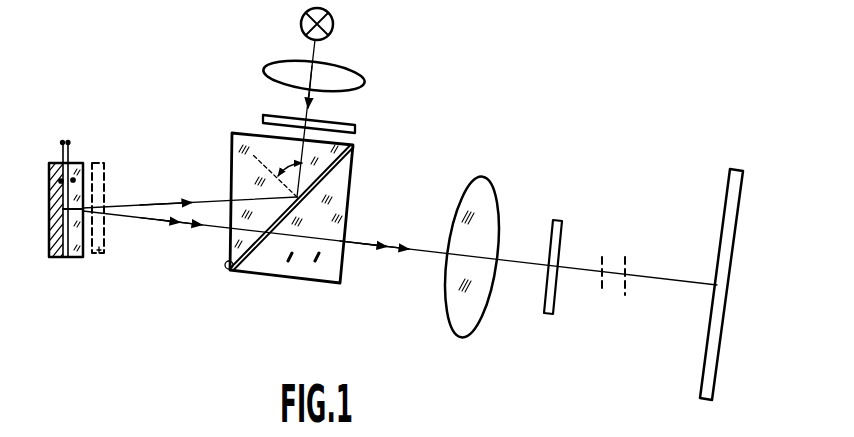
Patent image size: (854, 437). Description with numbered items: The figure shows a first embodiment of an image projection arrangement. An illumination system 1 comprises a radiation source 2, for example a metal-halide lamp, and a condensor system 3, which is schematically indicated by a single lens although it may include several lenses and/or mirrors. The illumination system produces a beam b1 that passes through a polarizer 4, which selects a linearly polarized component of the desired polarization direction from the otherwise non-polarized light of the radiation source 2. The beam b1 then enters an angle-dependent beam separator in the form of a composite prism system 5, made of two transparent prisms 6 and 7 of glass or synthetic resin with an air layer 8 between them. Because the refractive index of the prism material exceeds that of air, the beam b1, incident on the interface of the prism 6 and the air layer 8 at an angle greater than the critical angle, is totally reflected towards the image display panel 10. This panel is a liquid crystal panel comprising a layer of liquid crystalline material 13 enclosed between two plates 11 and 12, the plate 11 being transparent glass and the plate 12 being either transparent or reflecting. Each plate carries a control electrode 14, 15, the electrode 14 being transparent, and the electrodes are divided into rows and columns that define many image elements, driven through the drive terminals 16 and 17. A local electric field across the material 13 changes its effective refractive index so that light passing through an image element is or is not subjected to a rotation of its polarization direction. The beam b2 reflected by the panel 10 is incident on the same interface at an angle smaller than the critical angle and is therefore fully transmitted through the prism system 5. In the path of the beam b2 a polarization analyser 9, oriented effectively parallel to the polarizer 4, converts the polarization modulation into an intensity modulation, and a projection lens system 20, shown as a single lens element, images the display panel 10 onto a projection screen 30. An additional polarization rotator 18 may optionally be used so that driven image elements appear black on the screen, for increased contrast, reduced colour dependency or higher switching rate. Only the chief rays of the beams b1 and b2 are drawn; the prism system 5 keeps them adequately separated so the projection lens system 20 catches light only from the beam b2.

The illumination system 1 is at (246, 51).
The radiation source 2 is at (333, 25).
The condensor system 3 is at (364, 78).
The polarizer 4 is at (357, 128).
The composite prism system 5 is at (295, 222).
The prism 6 is at (238, 180).
The prism 7 is at (288, 275).
The air layer 8 is at (225, 268).
The polarization analyser 9 is at (551, 316).
The image display panel 10 is at (59, 217).
The plate 11 is at (78, 258).
The plate 12 is at (55, 259).
The layer of liquid crystalline material 13 is at (65, 258).
The control electrode 14 is at (73, 180).
The control electrode 15 is at (61, 181).
The drive terminal 16 is at (68, 142).
The drive terminal 17 is at (62, 142).
The additional polarization rotator 18 is at (110, 252).
The projection lens system 20 is at (460, 336).
The projection screen 30 is at (706, 403).
The beam b1 is at (174, 203).
The beam b2 is at (398, 251).